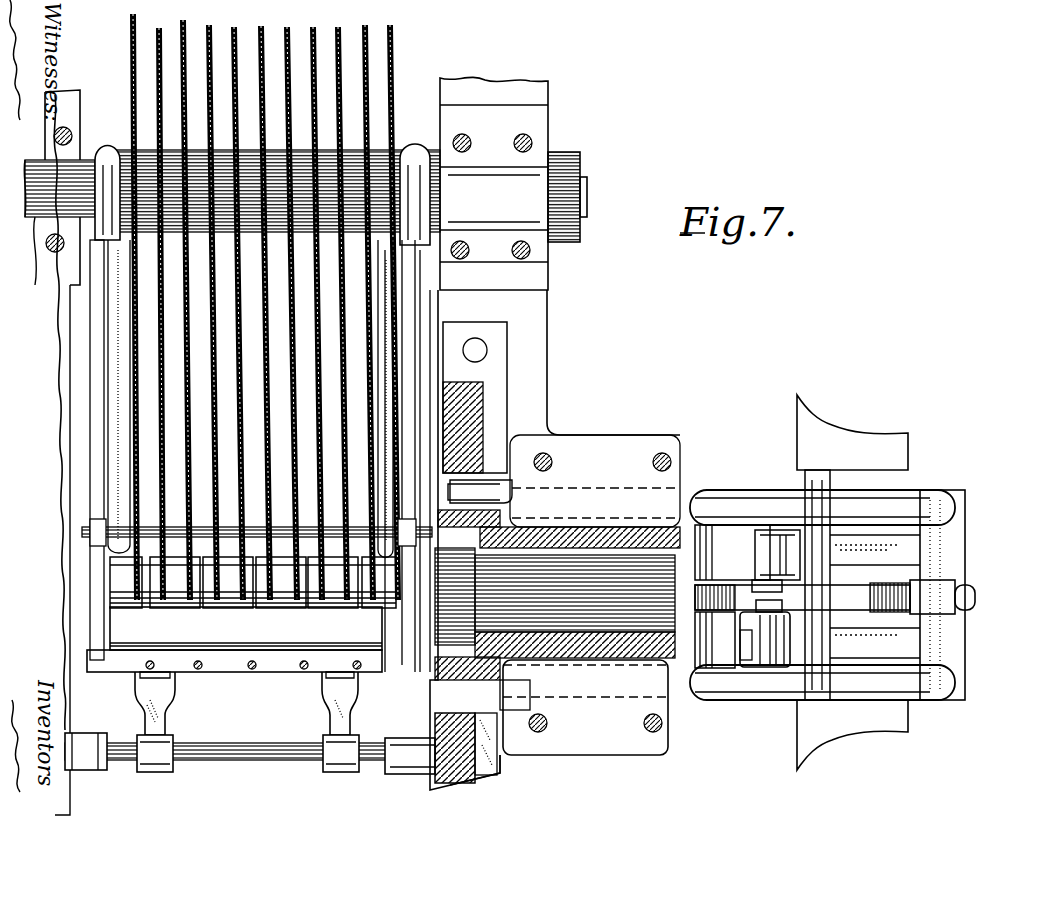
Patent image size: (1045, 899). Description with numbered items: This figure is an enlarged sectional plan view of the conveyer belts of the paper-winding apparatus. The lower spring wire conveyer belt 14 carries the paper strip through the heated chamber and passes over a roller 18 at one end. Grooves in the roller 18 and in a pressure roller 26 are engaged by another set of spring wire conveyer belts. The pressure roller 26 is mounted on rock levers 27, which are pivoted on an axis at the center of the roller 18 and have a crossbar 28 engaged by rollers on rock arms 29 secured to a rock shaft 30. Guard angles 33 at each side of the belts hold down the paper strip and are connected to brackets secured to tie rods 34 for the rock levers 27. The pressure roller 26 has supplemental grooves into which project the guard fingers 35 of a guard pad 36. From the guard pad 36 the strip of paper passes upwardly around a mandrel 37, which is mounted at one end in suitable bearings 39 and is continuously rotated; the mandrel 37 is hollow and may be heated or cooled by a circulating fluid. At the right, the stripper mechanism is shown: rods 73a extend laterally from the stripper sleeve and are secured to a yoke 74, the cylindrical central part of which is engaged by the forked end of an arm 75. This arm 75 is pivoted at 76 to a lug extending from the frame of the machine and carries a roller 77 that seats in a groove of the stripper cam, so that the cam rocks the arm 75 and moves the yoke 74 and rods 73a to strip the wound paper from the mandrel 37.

The lower spring wire conveyer belt 14 is at (312, 30).
The roller 18 is at (150, 150).
The pressure roller 26 is at (163, 400).
The rock levers 27 is at (98, 430).
The crossbar 28 is at (243, 672).
The rock arms 29 is at (160, 725).
The rock shaft 30 is at (268, 750).
The guard angles 33 is at (126, 342).
The tie rods 34 is at (300, 262).
The guard fingers 35 is at (160, 600).
The guard pad 36 is at (246, 628).
The mandrel 37 is at (436, 675).
The bearings 39 is at (592, 700).
The rods 73a is at (752, 500).
The yoke 74 is at (962, 642).
The arm 75 is at (835, 597).
The pivot 76 is at (747, 596).
The roller 77 is at (750, 670).